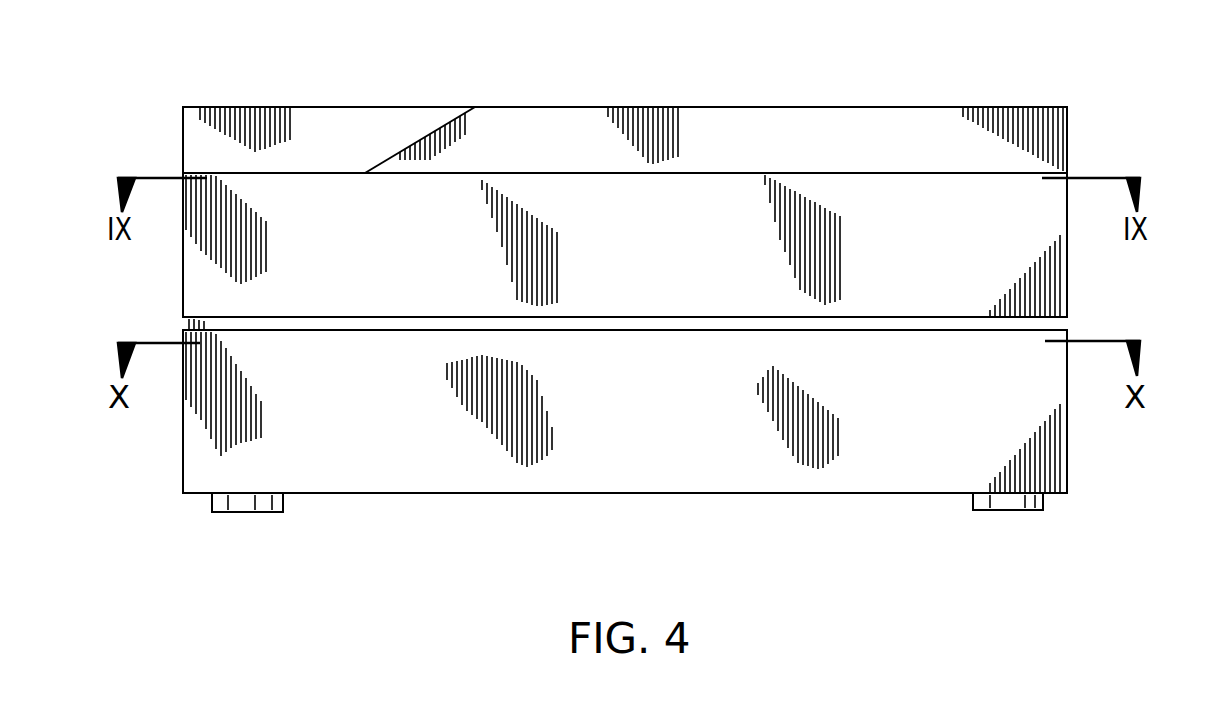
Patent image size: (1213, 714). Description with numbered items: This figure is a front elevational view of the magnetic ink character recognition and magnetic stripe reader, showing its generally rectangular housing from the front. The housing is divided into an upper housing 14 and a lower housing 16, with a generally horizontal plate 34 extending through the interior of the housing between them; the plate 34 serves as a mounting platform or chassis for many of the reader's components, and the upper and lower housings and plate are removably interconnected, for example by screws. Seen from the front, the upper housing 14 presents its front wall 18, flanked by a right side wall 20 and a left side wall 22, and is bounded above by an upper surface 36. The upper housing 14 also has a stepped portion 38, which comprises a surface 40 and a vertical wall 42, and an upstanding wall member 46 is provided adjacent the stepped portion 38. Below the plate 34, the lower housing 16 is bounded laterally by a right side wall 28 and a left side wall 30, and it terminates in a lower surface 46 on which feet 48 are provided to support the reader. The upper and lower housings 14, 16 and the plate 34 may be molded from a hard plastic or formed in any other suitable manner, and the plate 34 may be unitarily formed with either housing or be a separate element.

The upper housing 14 is at (627, 252).
The lower housing 16 is at (616, 416).
The front wall 18 is at (223, 262).
The right side wall 20 is at (1068, 205).
The left side wall 22 is at (183, 287).
The right side wall 28 is at (1070, 467).
The left side wall 30 is at (183, 460).
The plate 34 is at (205, 327).
The upper surface 36 is at (730, 172).
The stepped portion 38 is at (556, 95).
The surface 40 is at (396, 128).
The vertical wall 42 is at (203, 137).
The lower surface 46 is at (870, 120).
The feet 48 is at (222, 513).